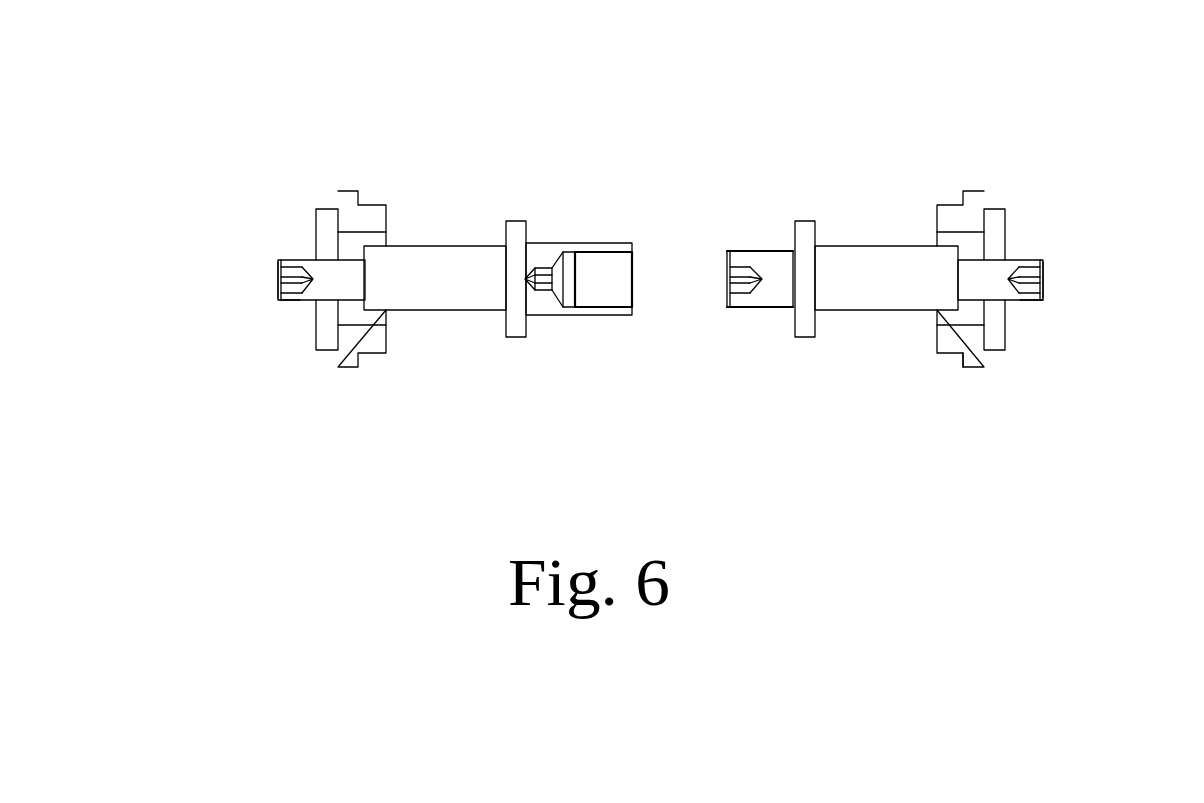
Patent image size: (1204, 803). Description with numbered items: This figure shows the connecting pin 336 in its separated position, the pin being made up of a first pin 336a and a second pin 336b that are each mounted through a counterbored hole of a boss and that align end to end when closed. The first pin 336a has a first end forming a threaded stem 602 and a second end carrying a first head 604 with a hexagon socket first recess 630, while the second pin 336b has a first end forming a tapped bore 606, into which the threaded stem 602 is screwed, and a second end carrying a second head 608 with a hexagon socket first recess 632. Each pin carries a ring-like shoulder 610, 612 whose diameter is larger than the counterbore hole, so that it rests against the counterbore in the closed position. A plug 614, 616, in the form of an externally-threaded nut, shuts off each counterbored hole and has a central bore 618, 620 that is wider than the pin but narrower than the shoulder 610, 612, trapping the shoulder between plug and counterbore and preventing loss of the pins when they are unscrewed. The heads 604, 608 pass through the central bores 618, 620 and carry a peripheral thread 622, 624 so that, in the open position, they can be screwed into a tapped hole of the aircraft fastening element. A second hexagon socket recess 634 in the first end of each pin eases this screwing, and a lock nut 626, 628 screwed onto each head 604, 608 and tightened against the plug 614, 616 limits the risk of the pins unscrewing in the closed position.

The connecting pin 336 is at (1016, 464).
The first pin 336a is at (972, 151).
The second pin 336b is at (260, 174).
The threaded stem 602 is at (757, 258).
The first head 604 is at (1007, 267).
The tapped bore 606 is at (607, 267).
The second head 608 is at (300, 261).
The shoulder 610 is at (803, 332).
The shoulder 612 is at (513, 330).
The plug 614 is at (970, 353).
The plug 616 is at (347, 357).
The central bore 618 is at (955, 243).
The central bore 620 is at (373, 238).
The thread 622 is at (1030, 302).
The thread 624 is at (289, 300).
The lock nut 626 is at (995, 217).
The lock nut 628 is at (323, 235).
The first recess 630 is at (1045, 272).
The first recess 632 is at (282, 281).
The second recess 634 is at (728, 287).